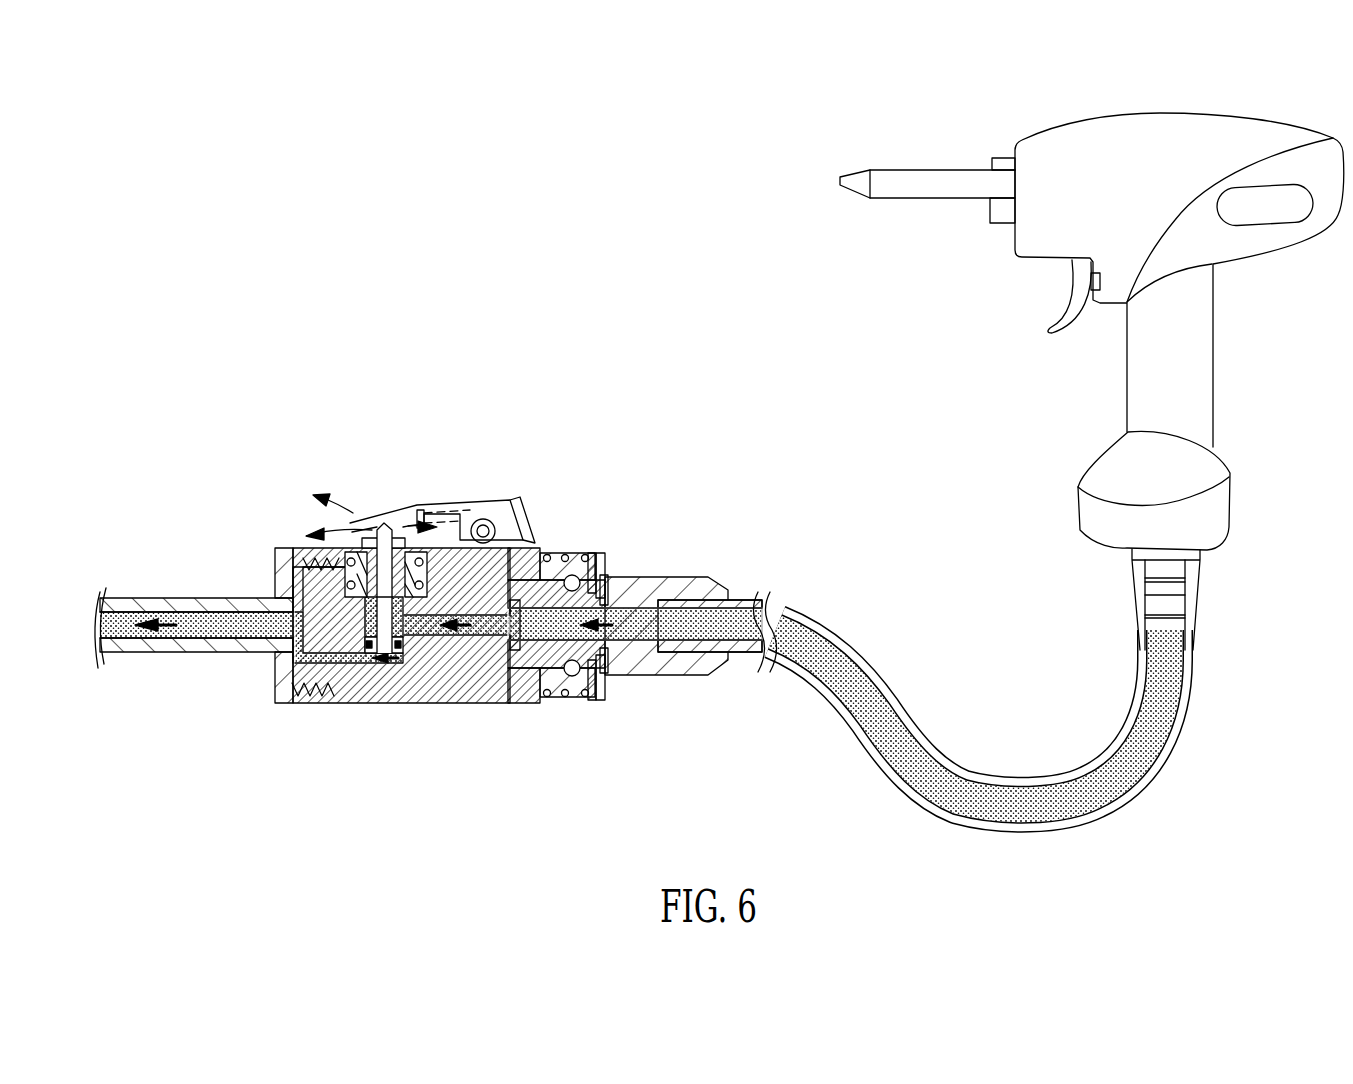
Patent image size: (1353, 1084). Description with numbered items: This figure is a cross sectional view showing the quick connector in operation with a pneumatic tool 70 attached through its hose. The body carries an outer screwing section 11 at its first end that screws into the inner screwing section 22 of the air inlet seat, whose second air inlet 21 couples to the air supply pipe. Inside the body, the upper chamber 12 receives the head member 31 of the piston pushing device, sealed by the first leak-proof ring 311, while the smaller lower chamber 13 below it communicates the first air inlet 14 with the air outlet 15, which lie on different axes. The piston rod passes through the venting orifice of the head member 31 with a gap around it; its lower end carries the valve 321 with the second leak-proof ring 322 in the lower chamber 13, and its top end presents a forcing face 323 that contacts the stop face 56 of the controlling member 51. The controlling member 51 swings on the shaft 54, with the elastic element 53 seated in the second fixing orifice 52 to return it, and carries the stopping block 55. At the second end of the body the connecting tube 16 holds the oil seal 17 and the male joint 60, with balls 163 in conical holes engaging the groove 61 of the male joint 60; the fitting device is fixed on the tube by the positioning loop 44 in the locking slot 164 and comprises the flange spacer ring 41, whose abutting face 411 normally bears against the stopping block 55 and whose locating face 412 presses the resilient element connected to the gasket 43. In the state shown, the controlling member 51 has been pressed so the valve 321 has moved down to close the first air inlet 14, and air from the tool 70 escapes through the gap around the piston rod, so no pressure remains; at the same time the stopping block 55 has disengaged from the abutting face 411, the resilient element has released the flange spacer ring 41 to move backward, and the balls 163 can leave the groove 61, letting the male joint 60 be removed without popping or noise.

The outer screwing section 11 is at (320, 680).
The inner screwing section 22 is at (406, 625).
The upper chamber 12 is at (320, 555).
The head member 31 is at (310, 625).
The first leak-proof ring 311 is at (347, 587).
The lower chamber 13 is at (405, 650).
The first air inlet 14 is at (370, 660).
The air outlet 15 is at (478, 680).
The connecting tube 16 is at (548, 697).
The oil seal 17 is at (578, 578).
The balls 163 is at (607, 583).
The locking slot 164 is at (604, 660).
The second air inlet 21 is at (243, 625).
The valve 321 is at (404, 662).
The second leak-proof ring 322 is at (418, 665).
The forcing face 323 is at (371, 517).
The flange spacer ring 41 is at (520, 690).
The abutting face 411 is at (550, 556).
The locating face 412 is at (567, 697).
The gasket 43 is at (588, 697).
The positioning loop 44 is at (600, 673).
The controlling member 51 is at (389, 518).
The second fixing orifice 52 is at (488, 522).
The elastic element 53 is at (421, 514).
The shaft 54 is at (436, 521).
The stopping block 55 is at (522, 533).
The stop face 56 is at (373, 527).
The male joint 60 is at (640, 585).
The groove 61 is at (655, 600).
The tool 70 is at (985, 362).